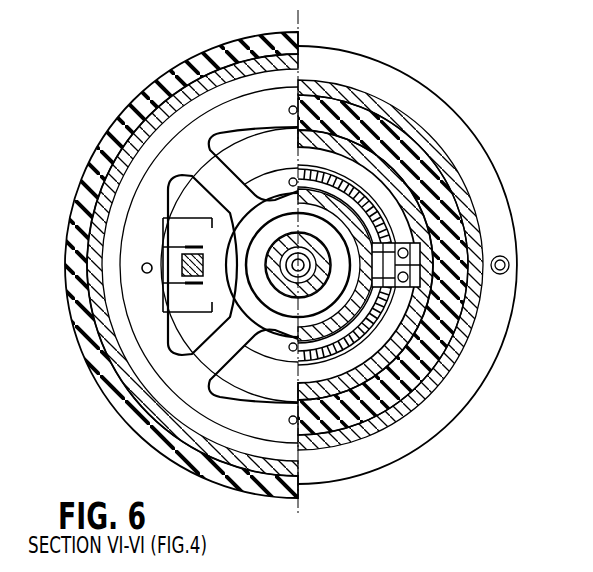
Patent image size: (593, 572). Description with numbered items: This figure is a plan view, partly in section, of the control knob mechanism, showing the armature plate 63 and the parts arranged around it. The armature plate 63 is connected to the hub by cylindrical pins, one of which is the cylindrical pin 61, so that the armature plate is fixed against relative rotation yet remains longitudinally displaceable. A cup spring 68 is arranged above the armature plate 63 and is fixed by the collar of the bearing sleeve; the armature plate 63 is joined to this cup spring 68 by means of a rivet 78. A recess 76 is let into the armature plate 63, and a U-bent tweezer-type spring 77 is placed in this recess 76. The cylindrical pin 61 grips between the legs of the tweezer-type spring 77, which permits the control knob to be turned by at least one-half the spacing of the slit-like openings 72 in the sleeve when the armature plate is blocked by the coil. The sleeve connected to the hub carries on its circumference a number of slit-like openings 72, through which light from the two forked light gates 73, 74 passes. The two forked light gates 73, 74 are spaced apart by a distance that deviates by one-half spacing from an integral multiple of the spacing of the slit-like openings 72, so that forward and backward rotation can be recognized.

The cylindrical pin 61 is at (188, 256).
The armature plate 63 is at (257, 386).
The cup spring 68 is at (158, 443).
The slit-like openings 72 is at (332, 174).
The forked light gate 73 is at (368, 240).
The forked light gate 74 is at (477, 305).
The recess 76 is at (100, 364).
The tweezer-type spring 77 is at (182, 255).
The rivet 78 is at (142, 272).